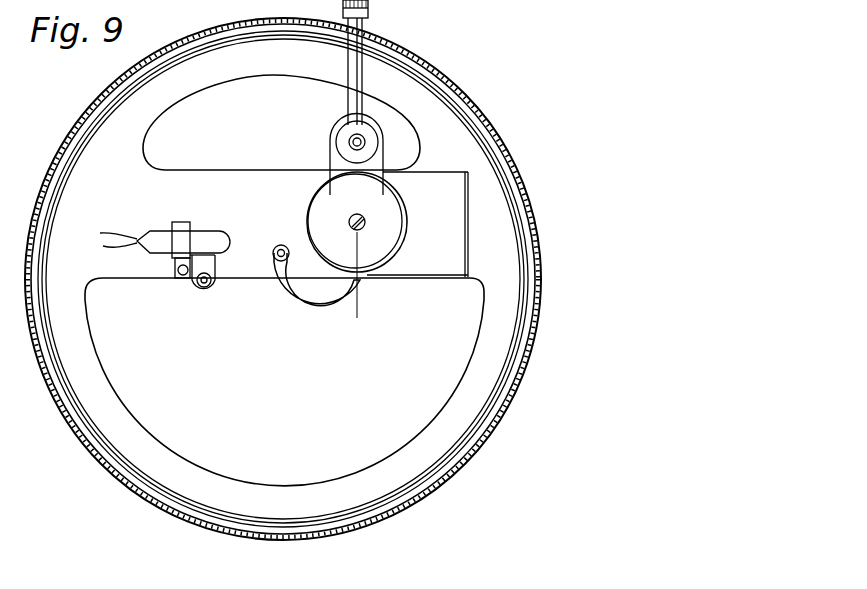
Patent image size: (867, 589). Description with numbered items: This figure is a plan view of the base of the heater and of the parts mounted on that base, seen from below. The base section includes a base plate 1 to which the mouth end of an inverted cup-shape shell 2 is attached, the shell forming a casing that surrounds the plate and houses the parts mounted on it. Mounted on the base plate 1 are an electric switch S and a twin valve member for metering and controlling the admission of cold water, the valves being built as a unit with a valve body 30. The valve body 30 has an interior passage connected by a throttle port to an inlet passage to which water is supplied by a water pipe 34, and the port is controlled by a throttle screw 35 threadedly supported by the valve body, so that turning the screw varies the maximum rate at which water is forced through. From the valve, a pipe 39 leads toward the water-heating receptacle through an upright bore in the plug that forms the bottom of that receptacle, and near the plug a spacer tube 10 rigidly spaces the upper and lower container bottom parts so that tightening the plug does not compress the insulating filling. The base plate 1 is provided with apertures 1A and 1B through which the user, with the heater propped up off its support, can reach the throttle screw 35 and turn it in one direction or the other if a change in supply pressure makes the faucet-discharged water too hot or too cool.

The base plate 1 is at (95, 184).
The aperture 1A is at (140, 417).
The aperture 1B is at (180, 100).
The inverted cup-shape shell 2 is at (537, 325).
The spacer tube 10 is at (360, 95).
The valve body 30 is at (333, 158).
The water pipe 34 is at (357, 30).
The throttle screw 35 is at (349, 141).
The pipe 39 is at (315, 310).
The electric switch S is at (200, 240).